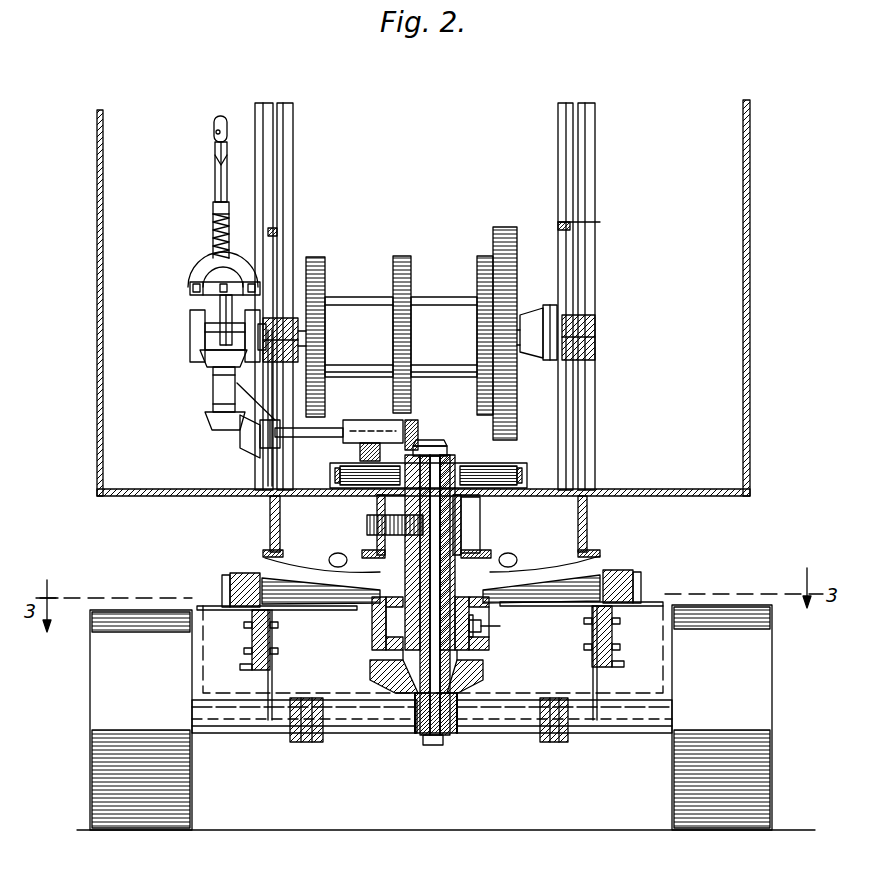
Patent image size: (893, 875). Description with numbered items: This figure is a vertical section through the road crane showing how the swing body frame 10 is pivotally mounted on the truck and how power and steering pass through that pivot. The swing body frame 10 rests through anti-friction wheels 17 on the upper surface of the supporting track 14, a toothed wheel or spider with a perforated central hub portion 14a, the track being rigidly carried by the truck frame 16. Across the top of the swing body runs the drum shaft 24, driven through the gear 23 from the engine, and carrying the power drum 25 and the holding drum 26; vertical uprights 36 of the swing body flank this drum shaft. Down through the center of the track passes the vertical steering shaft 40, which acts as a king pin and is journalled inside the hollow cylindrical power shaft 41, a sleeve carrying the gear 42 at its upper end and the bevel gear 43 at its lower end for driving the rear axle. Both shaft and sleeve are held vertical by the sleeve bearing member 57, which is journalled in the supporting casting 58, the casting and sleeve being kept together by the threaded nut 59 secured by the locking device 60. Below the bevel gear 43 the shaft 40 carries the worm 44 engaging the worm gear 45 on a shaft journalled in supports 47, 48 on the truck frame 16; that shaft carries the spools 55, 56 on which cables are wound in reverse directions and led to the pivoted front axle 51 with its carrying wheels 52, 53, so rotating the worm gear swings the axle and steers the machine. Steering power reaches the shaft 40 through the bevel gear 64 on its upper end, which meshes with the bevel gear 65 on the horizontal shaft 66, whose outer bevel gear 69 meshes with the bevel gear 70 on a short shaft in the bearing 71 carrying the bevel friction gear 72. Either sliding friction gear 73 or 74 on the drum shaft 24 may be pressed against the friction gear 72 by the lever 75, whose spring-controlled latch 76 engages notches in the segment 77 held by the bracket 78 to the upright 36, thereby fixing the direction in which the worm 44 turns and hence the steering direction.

The swing body frame 10 is at (270, 517).
The supporting track 14 is at (232, 585).
The central hub portion 14a is at (368, 566).
The truck frame 16 is at (250, 633).
The anti-friction wheels 17 is at (262, 572).
The gear 23 is at (504, 228).
The drum shaft 24 is at (290, 320).
The power drum 25 is at (442, 296).
The holding drum 26 is at (362, 296).
The upright 36 is at (262, 118).
The vertical shaft 40 is at (445, 505).
The hollow cylindrical power shaft 41 is at (455, 530).
The gear 42 is at (525, 466).
The bevel gear 43 is at (485, 664).
The worm 44 is at (468, 694).
The worm gear 45 is at (433, 746).
The support 47 is at (273, 681).
The support 48 is at (593, 677).
The pivoted front axle 51 is at (238, 733).
The carrying wheel 52 is at (100, 706).
The carrying wheel 53 is at (776, 660).
The spool 55 is at (320, 742).
The spool 56 is at (555, 742).
The sleeve bearing member 57 is at (528, 562).
The supporting casting 58 is at (490, 612).
The threaded nut 59 is at (380, 648).
The locking device 60 is at (495, 634).
The bevel gear 64 is at (440, 440).
The bevel gear 65 is at (418, 422).
The horizontal shaft 66 is at (333, 428).
The bevel gear 69 is at (240, 450).
The bevel gear 70 is at (212, 420).
The bearing 71 is at (213, 388).
The bevel friction gear 72 is at (203, 362).
The sliding friction gear 73 is at (190, 325).
The sliding friction gear 74 is at (236, 318).
The lever 75 is at (215, 170).
The latch 76 is at (214, 122).
The segment 77 is at (198, 265).
The bracket 78 is at (192, 290).